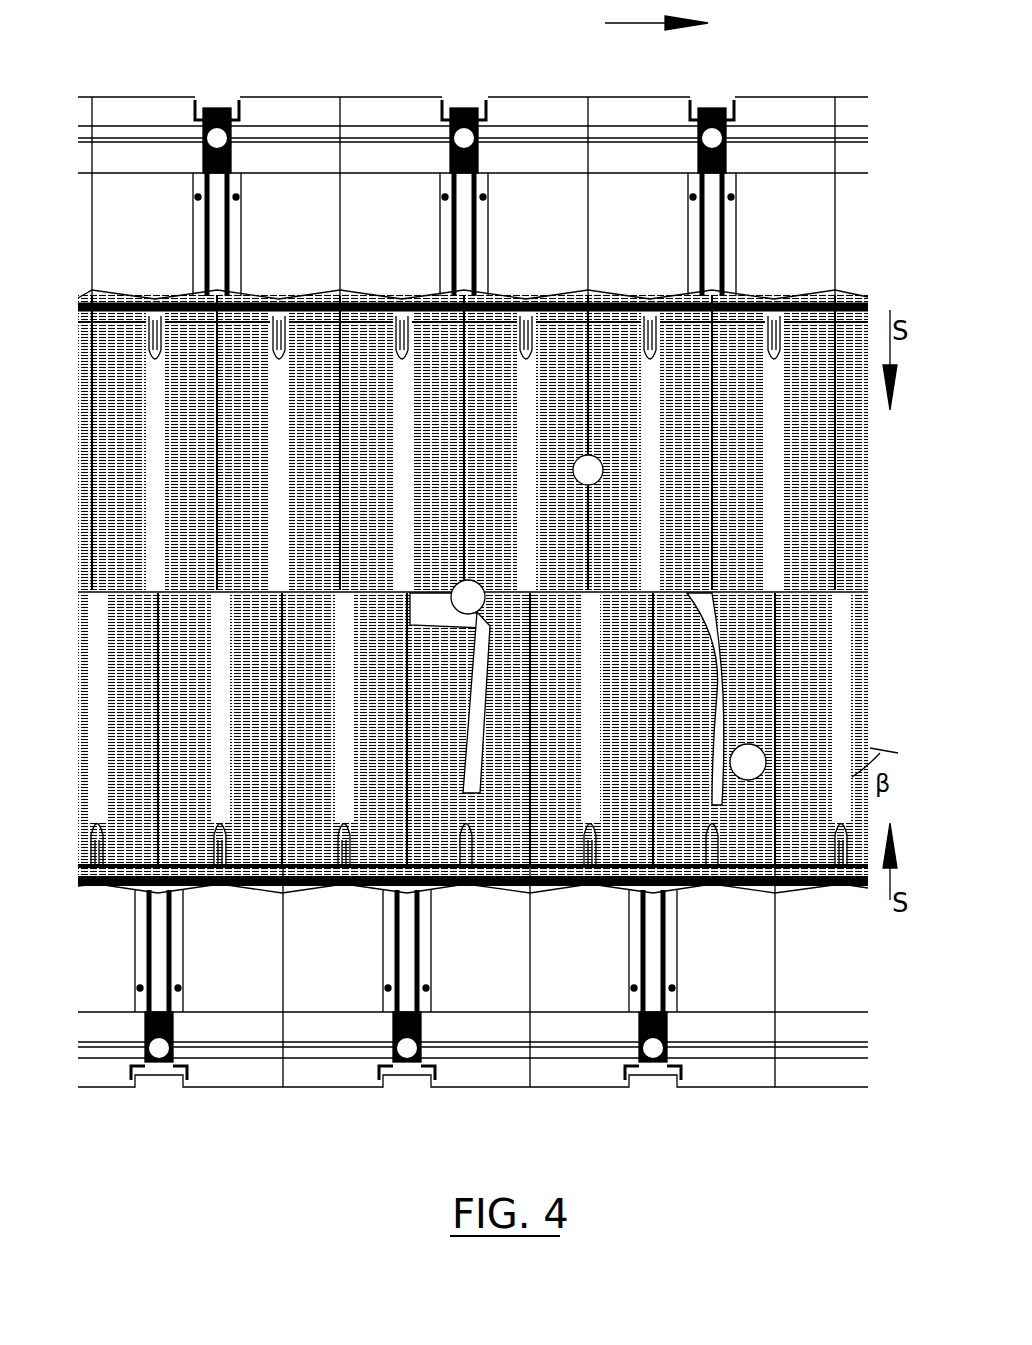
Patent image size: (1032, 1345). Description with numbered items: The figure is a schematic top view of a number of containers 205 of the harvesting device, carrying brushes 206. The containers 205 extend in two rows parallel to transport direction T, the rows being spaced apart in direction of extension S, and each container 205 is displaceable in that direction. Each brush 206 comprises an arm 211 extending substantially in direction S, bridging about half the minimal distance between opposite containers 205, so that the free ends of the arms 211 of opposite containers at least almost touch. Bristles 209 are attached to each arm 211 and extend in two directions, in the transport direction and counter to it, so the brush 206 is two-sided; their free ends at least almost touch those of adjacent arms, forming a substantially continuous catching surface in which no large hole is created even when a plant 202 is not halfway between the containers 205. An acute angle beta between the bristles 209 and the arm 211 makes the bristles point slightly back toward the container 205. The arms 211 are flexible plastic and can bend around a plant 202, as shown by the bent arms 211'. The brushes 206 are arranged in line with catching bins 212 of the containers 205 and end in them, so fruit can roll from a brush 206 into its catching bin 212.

The plant 202 is at (588, 463).
The container 205 is at (120, 157).
The brush 206 is at (478, 588).
The bristles 209 is at (118, 360).
The arm 211 is at (441, 544).
The bent arm 211' is at (591, 774).
The catching bin 212 is at (413, 197).